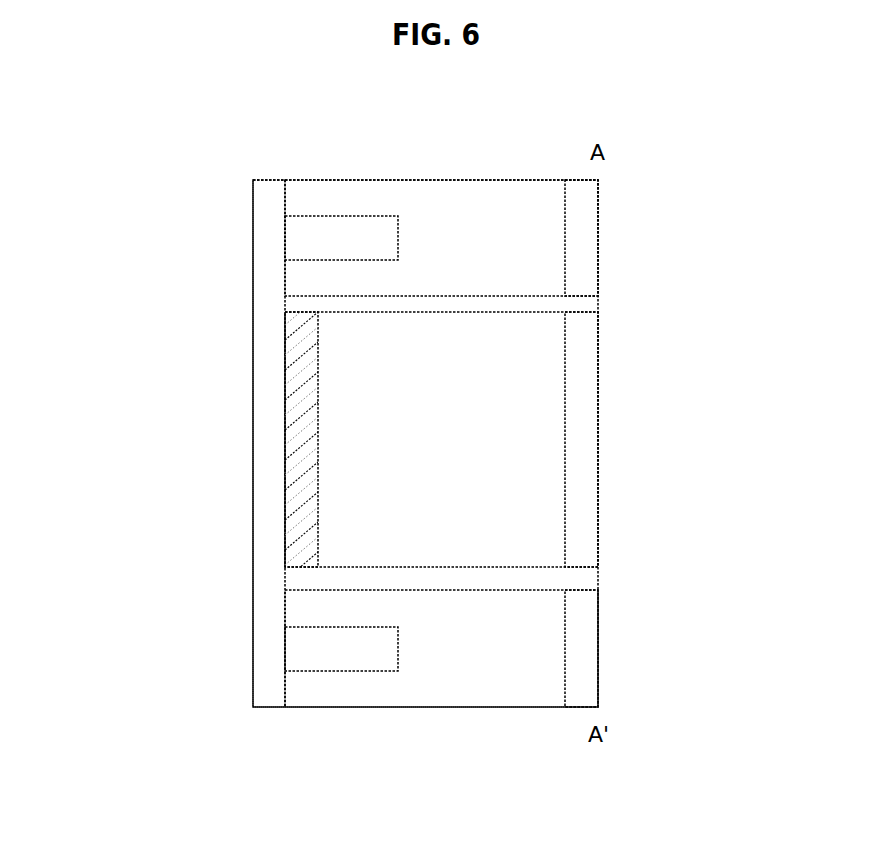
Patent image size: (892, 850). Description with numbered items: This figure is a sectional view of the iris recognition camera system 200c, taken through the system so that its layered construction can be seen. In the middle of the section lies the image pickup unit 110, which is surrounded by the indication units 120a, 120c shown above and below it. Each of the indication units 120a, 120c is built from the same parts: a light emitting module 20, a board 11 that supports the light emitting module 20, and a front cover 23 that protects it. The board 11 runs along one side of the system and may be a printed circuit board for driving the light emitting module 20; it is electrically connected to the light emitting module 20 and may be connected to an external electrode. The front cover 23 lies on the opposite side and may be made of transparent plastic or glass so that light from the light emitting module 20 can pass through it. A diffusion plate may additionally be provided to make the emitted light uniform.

The iris recognition camera system 200c is at (147, 143).
The board 11 is at (270, 200).
The light emitting module 20 is at (312, 240).
The front cover 23 is at (582, 276).
The image pickup unit 110 is at (508, 444).
The indication unit 120a is at (508, 237).
The indication unit 120c is at (508, 657).